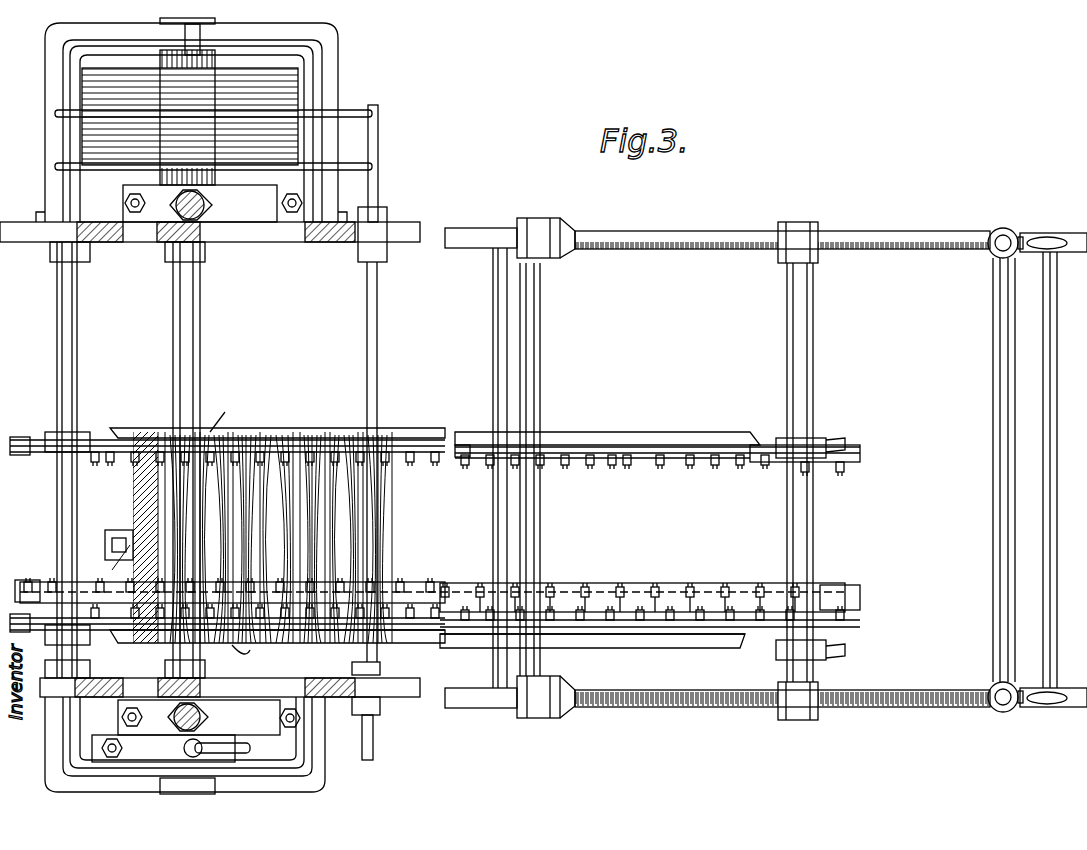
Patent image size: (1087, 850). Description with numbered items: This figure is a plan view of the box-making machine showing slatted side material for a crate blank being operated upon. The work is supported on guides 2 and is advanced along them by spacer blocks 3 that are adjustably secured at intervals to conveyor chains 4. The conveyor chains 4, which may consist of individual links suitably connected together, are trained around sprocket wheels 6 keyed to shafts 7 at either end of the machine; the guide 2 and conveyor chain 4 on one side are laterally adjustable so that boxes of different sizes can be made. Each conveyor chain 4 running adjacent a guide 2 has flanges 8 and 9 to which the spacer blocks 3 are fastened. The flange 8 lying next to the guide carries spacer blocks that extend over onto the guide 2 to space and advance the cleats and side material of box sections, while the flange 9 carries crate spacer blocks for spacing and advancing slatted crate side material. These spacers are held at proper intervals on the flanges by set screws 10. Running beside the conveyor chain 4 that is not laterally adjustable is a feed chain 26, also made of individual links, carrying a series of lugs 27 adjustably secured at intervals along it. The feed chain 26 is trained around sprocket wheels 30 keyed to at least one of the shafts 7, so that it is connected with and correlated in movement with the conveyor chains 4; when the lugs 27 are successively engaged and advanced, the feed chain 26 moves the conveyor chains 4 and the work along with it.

The guide 2 is at (692, 438).
The spacer block 3 is at (610, 460).
The conveyor chain 4 is at (665, 456).
The sprocket wheel 6 is at (58, 435).
The shaft 7 is at (57, 516).
The flange 8 is at (476, 447).
The flange 9 is at (483, 456).
The set screw 10 is at (627, 468).
The feed chain 26 is at (668, 585).
The lug 27 is at (695, 590).
The sprocket wheel 30 is at (25, 590).